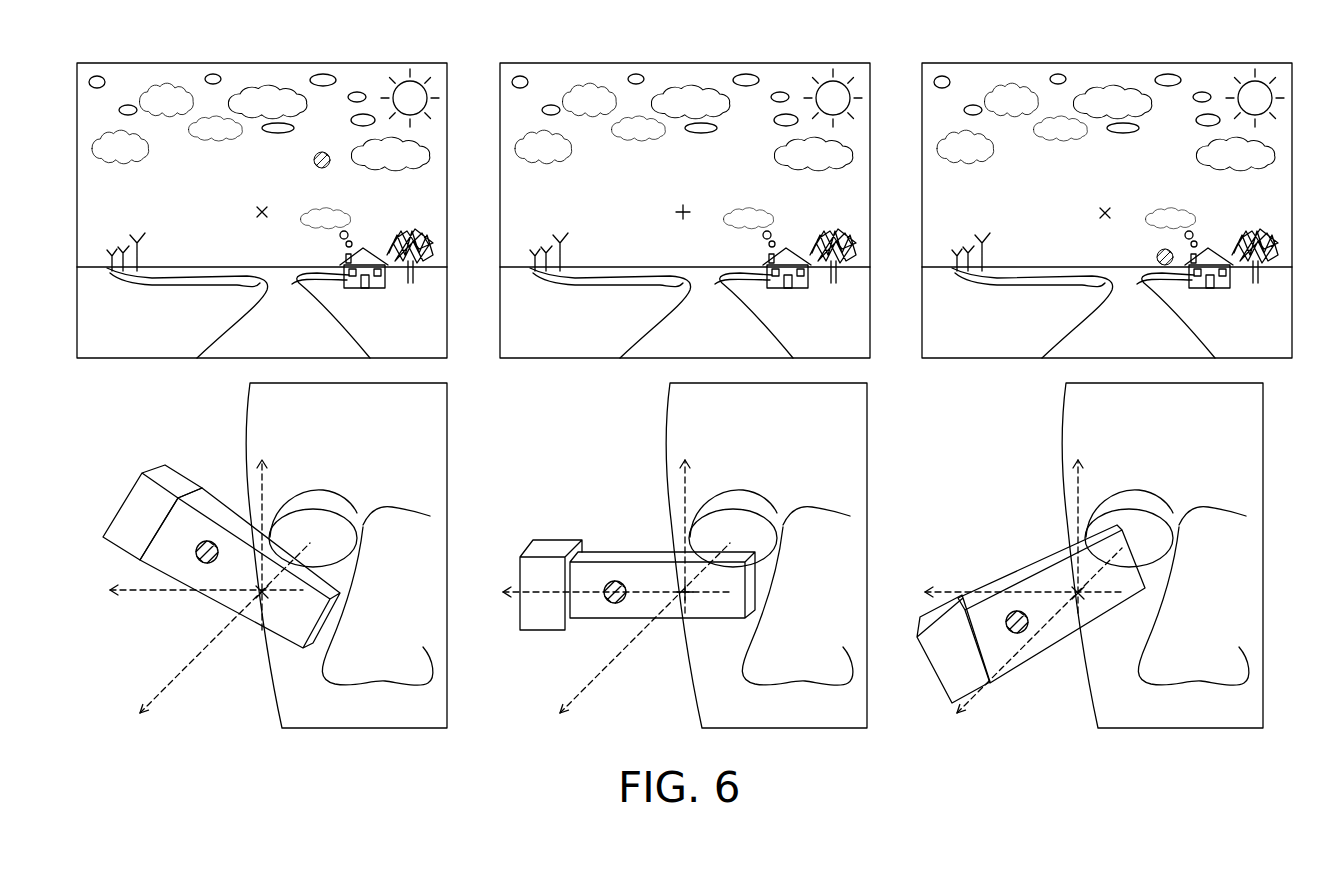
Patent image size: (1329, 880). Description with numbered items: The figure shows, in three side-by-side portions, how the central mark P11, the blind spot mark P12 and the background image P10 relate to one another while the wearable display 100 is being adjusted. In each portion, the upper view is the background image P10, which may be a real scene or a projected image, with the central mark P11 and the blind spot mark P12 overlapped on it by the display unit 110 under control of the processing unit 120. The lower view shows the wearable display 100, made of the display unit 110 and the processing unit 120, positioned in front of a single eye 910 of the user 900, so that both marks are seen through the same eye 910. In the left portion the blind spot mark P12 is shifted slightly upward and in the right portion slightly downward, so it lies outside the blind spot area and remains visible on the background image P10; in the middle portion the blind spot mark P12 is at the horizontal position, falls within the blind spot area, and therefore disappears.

The background image P10 is at (366, 73).
The central mark P11 is at (263, 207).
The blind spot mark P12 is at (323, 152).
The wearable display 100 is at (622, 582).
The display unit 110 is at (205, 513).
The processing unit 120 is at (210, 431).
The user 900 is at (427, 433).
The eye 910 is at (430, 516).